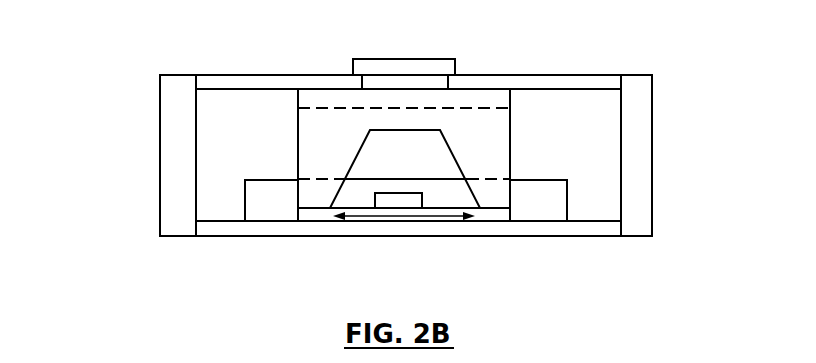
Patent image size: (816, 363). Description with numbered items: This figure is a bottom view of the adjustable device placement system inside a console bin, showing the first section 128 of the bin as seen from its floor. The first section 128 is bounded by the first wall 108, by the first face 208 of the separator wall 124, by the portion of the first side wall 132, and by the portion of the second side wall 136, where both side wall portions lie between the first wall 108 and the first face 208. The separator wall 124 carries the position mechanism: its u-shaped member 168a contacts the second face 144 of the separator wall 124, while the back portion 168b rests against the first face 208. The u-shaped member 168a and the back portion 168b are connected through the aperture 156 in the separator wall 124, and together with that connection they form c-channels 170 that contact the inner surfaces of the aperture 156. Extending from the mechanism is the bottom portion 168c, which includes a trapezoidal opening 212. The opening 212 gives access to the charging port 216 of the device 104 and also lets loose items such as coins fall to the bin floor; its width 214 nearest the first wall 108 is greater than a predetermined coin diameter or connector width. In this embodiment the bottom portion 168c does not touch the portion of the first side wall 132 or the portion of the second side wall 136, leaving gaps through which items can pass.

The first section 128 is at (156, 23).
The portion of the first side wall 132 is at (177, 178).
The portion of the second side wall 136 is at (640, 108).
The second face 144 is at (263, 74).
The separator wall 124 is at (320, 83).
The first face 208 is at (230, 90).
The aperture 156 is at (422, 83).
The u-shaped member 168a is at (372, 59).
The c-channels 170 is at (350, 82).
The back portion 168b is at (473, 97).
The bottom portion 168c is at (398, 117).
The device 104 is at (567, 196).
The first wall 108 is at (327, 230).
The opening 212 is at (373, 168).
The charging port 216 is at (387, 192).
The width 214 is at (418, 216).